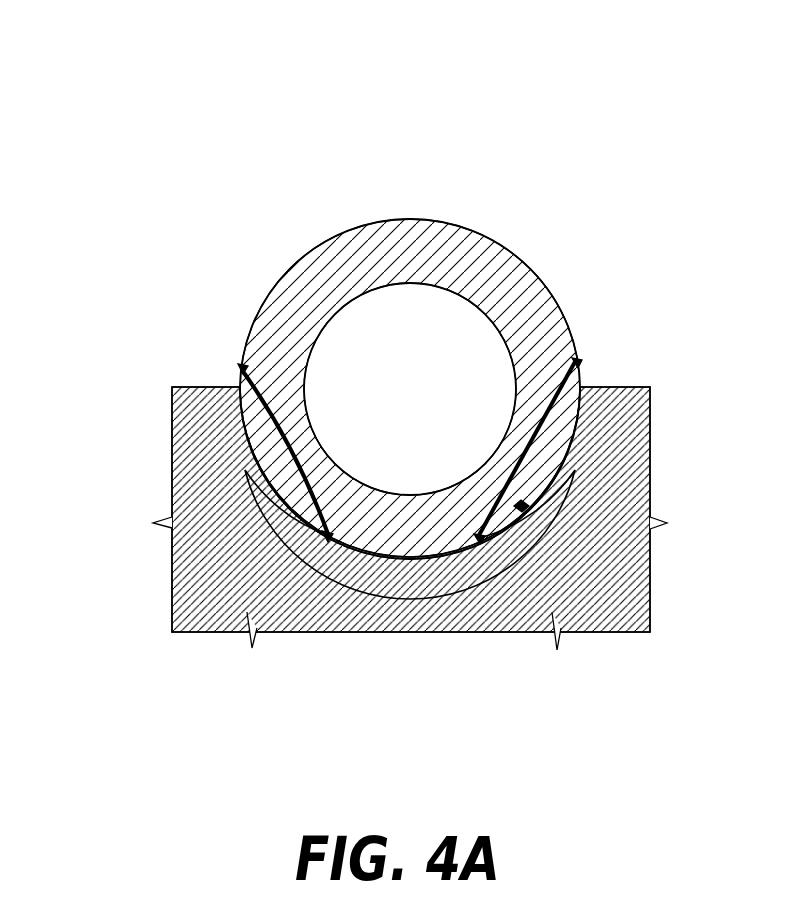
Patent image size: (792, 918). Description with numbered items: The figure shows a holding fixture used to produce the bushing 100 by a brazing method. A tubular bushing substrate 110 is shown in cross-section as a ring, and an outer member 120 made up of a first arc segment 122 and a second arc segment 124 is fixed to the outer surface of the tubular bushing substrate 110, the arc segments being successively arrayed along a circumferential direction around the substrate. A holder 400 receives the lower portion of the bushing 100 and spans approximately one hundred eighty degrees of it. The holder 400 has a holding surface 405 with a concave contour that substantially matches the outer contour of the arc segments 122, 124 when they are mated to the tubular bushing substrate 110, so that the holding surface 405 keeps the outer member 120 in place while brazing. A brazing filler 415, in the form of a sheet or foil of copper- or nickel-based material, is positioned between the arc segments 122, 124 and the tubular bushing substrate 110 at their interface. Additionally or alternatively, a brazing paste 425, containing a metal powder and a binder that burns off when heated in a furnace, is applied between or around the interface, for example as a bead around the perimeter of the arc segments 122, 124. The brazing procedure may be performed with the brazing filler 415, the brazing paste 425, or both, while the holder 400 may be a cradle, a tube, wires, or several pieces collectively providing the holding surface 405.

The bushing 100 is at (407, 421).
The tubular bushing substrate 110 is at (443, 265).
The outer member 120 is at (380, 670).
The first arc segment 122 is at (322, 540).
The second arc segment 124 is at (479, 540).
The holder 400 is at (185, 437).
The holding surface 405 is at (514, 510).
The brazing filler 415 is at (262, 395).
The brazing paste 425 is at (243, 368).